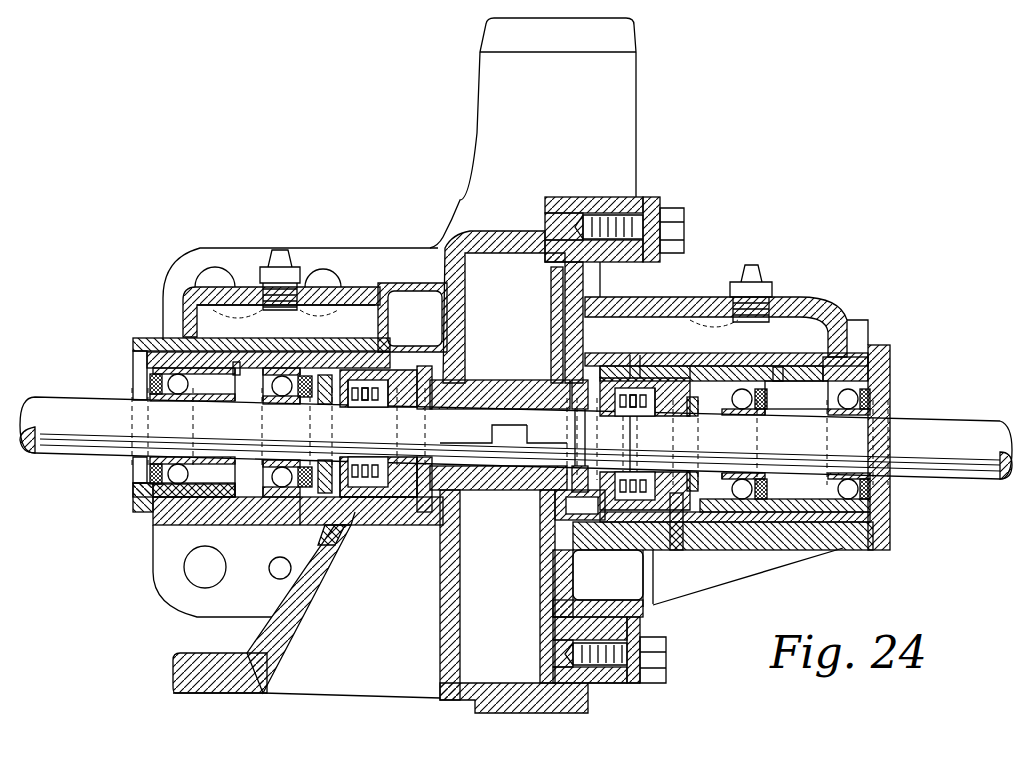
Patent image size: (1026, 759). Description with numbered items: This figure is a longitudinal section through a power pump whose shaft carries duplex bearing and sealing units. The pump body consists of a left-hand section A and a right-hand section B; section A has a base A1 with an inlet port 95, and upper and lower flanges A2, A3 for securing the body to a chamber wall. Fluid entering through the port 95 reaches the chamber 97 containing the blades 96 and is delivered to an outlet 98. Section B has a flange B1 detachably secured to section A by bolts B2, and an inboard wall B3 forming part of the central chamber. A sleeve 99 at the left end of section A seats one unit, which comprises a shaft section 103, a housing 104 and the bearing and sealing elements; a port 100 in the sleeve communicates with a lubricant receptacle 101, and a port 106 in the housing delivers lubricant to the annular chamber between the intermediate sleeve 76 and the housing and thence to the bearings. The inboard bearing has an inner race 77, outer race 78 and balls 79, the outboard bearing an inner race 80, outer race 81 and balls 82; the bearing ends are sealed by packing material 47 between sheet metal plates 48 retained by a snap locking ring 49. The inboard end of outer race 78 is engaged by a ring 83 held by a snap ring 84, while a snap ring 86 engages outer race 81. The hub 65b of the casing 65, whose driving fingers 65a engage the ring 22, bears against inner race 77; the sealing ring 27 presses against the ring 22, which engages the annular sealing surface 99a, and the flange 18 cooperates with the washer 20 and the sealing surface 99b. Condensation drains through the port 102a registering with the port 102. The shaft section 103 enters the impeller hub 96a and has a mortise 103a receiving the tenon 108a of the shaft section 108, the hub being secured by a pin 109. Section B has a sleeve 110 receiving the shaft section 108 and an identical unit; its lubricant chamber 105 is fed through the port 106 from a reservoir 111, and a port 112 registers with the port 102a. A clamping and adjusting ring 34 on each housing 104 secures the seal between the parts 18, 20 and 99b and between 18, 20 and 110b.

The shaft section 103 is at (265, 431).
The shaft section 108 is at (981, 432).
The mortise 103a is at (483, 433).
The tenon 108a is at (510, 433).
The outlet 98 is at (533, 133).
The blades 96 is at (513, 307).
The impeller hub 96a is at (496, 484).
The chamber 97 is at (540, 676).
The inlet port 95 is at (306, 666).
The sleeve 99 is at (224, 525).
The annular sealing surface 99a is at (398, 404).
The annular sealing surface 99b is at (372, 527).
The port 100 is at (249, 350).
The lubricant receptacle 101 is at (240, 300).
The port 102 is at (330, 510).
The port 102a is at (345, 540).
The housing 104 is at (150, 505).
The lubricant chamber 105 is at (796, 395).
The port 106 is at (243, 365).
The pin 109 is at (583, 383).
The sleeve 110 is at (774, 552).
The sealing surface 110b is at (650, 349).
The lubricant reservoir 111 is at (717, 414).
The port 112 is at (640, 548).
The flange 18 is at (396, 518).
The washer 20 is at (394, 525).
The ring 22 is at (388, 412).
The sealing ring 27 is at (390, 412).
The clamping and adjusting ring 34 is at (884, 362).
The packing material 47 is at (147, 405).
The sheet metal plates 48 is at (150, 471).
The snap locking ring 49 is at (150, 380).
The casing 65 is at (390, 368).
The driving fingers 65a is at (350, 512).
The hub 65b is at (350, 398).
The intermediate sleeve 76 is at (235, 432).
The inner race 77 is at (291, 458).
The outer race 78 is at (305, 372).
The balls 79 is at (768, 500).
The inner race 80 is at (171, 458).
The outer race 81 is at (185, 522).
The balls 82 is at (510, 453).
The ring 83 is at (323, 495).
The snap ring 84 is at (328, 370).
The snap ring 86 is at (158, 337).
The body section A is at (362, 288).
The base A1 is at (226, 662).
The upper flange A2 is at (231, 248).
The lower flange A3 is at (195, 610).
The body section B is at (810, 304).
The flange B1 is at (657, 205).
The bolts B2 is at (676, 226).
The wall B3 is at (578, 292).